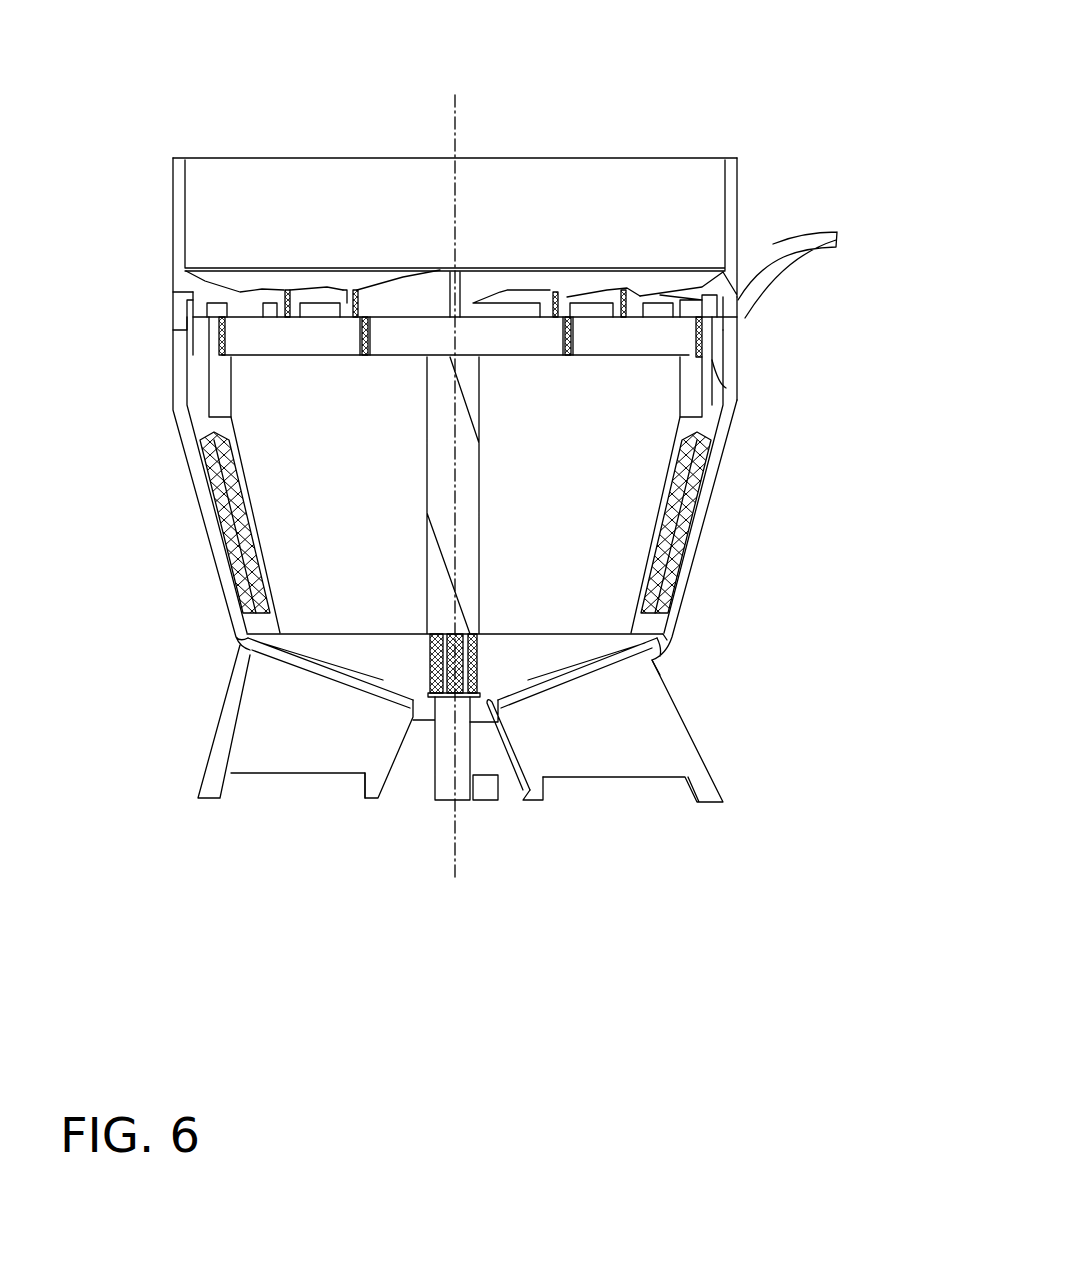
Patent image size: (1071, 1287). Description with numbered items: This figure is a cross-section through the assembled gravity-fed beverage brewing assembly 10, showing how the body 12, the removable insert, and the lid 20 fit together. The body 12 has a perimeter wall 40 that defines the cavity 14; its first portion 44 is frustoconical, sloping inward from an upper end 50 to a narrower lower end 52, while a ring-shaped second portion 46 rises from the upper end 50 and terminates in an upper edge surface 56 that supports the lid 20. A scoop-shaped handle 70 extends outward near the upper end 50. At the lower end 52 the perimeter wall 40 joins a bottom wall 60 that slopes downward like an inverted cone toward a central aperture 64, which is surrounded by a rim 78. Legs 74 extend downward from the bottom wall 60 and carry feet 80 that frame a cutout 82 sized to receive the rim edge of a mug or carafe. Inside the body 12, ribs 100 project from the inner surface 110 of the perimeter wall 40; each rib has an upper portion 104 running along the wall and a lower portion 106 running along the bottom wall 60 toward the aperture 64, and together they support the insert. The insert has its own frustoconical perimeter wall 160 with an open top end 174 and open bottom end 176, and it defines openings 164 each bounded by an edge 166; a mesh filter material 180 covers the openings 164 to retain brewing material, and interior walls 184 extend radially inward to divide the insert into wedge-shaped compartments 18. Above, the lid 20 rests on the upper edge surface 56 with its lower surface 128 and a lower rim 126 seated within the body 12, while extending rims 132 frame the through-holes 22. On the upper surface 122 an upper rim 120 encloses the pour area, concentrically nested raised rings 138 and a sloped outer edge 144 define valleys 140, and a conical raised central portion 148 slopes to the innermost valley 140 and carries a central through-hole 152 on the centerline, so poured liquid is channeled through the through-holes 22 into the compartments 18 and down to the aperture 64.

The beverage brewing assembly 10 is at (790, 80).
The body 12 is at (737, 405).
The cavity 14 is at (187, 340).
The compartments 18 is at (592, 586).
The lid 20 is at (178, 170).
The through-holes 22 is at (291, 285).
The perimeter wall 40 is at (687, 525).
The first portion 44 is at (687, 561).
The second portion 46 is at (727, 375).
The upper end 50 is at (737, 410).
The lower end 52 is at (668, 658).
The upper edge surface 56 is at (921, 296).
The bottom wall 60 is at (603, 663).
The aperture 64 is at (440, 722).
The handle 70 is at (776, 243).
The legs 74 is at (643, 735).
The rim 78 is at (428, 713).
The feet 80 is at (705, 790).
The cutout 82 is at (629, 782).
The ribs 100 is at (213, 317).
The upper portion 104 is at (200, 343).
The lower portion 106 is at (337, 641).
The inner surface 110 is at (233, 303).
The upper rim 120 is at (737, 172).
The upper surface 122 is at (267, 332).
The lower rim 126 is at (737, 317).
The lower surface 128 is at (100, 228).
The extending rims 132 is at (343, 303).
The raised rings 138 is at (239, 273).
The valleys 140 is at (564, 277).
The sloped outer edge 144 is at (697, 270).
The raised central portion 148 is at (420, 272).
The central through-hole 152 is at (462, 265).
The perimeter wall 160 is at (220, 388).
The openings 164 is at (207, 480).
The edge 166 is at (208, 423).
The top end 174 is at (737, 400).
The bottom end 176 is at (548, 635).
The filter material 180 is at (227, 541).
The interior walls 184 is at (632, 468).